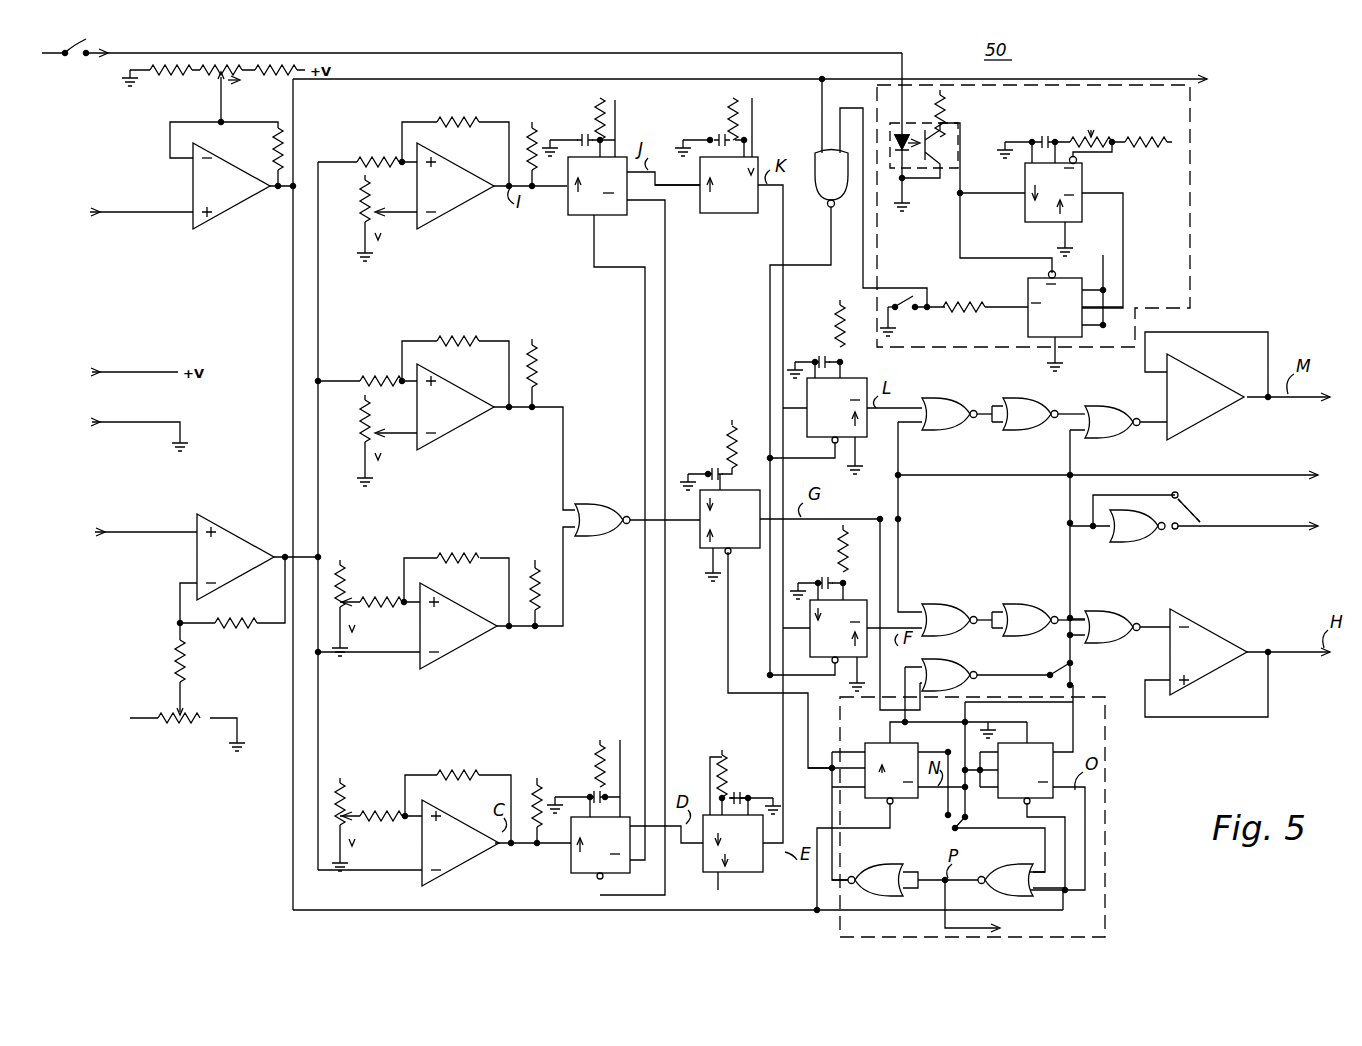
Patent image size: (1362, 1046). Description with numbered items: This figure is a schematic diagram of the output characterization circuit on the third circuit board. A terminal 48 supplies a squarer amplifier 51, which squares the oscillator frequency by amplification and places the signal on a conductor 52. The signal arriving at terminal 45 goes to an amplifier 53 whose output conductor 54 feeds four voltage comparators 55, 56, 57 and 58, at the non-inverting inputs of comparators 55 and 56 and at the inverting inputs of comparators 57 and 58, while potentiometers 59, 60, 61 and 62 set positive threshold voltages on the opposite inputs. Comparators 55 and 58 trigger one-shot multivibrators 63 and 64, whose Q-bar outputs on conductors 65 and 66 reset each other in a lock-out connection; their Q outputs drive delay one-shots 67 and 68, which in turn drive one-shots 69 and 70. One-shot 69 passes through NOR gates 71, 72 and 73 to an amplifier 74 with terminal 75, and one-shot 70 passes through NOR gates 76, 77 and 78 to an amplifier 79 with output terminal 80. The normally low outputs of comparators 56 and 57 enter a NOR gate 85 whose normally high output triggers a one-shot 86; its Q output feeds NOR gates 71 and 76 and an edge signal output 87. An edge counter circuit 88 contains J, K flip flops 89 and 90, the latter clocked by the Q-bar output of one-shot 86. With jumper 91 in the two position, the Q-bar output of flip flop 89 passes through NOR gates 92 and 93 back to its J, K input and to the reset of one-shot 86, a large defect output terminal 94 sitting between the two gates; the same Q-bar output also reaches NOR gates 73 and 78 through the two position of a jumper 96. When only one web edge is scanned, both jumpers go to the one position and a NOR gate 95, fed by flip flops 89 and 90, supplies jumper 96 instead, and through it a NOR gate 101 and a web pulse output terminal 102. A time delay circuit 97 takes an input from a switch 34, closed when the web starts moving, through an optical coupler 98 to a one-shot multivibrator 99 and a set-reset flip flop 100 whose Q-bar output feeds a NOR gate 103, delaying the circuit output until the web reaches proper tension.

The switch 34 is at (74, 54).
The terminal 45 is at (128, 533).
The terminal 48 is at (120, 210).
The squarer amplifier 51 is at (216, 155).
The conductor 52 is at (365, 82).
The amplifier 53 is at (232, 522).
The conductor 54 is at (303, 263).
The voltage comparator 55 is at (460, 192).
The voltage comparator 56 is at (460, 392).
The voltage comparator 57 is at (462, 602).
The voltage comparator 58 is at (458, 816).
The potentiometer 59 is at (362, 207).
The potentiometer 60 is at (362, 425).
The potentiometer 61 is at (344, 600).
The potentiometer 62 is at (348, 808).
The one-shot multivibrator 63 is at (569, 214).
The one-shot multivibrator 64 is at (568, 868).
The conductor 65 is at (667, 332).
The conductor 66 is at (644, 329).
The delay one-shot 67 is at (722, 214).
The delay one-shot 68 is at (751, 868).
The one-shot 69 is at (872, 382).
The one-shot 70 is at (856, 600).
The NOR gate 71 is at (946, 396).
The NOR gate 72 is at (1030, 396).
The NOR gate 73 is at (1108, 410).
The amplifier 74 is at (1210, 414).
The terminal 75 is at (1290, 397).
The NOR gate 76 is at (948, 606).
The NOR gate 77 is at (1036, 604).
The NOR gate 78 is at (1124, 618).
The amplifier 79 is at (1202, 622).
The output terminal 80 is at (1282, 652).
The NOR gate 85 is at (610, 502).
The one-shot 86 is at (694, 548).
The edge signal output 87 is at (1242, 478).
The edge counter circuit 88 is at (1105, 850).
The J, K flip flop 89 is at (880, 800).
The J, K flip flop 90 is at (1017, 800).
The jumper 91 is at (950, 830).
The NOR gate 92 is at (1016, 868).
The NOR gate 93 is at (882, 866).
The large defect output terminal 94 is at (937, 912).
The NOR gate 95 is at (927, 675).
The jumper 96 is at (1078, 674).
The time delay circuit 97 is at (1192, 197).
The optical coupler 98 is at (958, 128).
The one-shot multivibrator 99 is at (1030, 218).
The J, K flip flop wired as a set-reset flip flop 100 is at (1026, 280).
The NOR gate 101 is at (1136, 542).
The web pulse output terminal 102 is at (1237, 528).
The NOR gate 103 is at (818, 162).